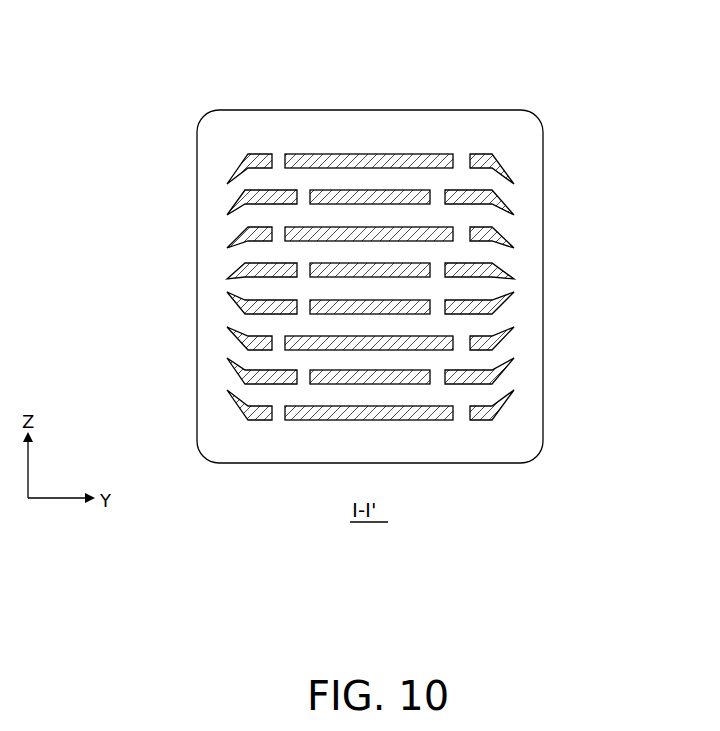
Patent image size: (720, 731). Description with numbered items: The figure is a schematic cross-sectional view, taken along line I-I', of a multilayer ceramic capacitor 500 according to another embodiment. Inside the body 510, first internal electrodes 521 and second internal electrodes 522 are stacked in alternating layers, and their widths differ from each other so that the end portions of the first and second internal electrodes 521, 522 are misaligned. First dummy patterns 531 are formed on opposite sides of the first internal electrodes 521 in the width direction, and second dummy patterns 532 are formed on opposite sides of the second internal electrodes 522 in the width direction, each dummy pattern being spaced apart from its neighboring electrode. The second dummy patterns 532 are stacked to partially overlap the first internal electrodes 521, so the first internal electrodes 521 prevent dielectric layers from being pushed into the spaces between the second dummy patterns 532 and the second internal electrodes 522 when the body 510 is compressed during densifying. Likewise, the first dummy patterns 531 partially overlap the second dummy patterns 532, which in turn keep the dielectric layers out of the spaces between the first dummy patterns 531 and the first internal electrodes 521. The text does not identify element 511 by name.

The multilayer ceramic capacitor 500 is at (278, 37).
The body 510 is at (388, 95).
The slat body 511 is at (503, 190).
The first internal electrode 521 is at (442, 154).
The second internal electrode 522 is at (415, 196).
The first dummy pattern 531 is at (491, 156).
The second dummy pattern 532 is at (493, 203).